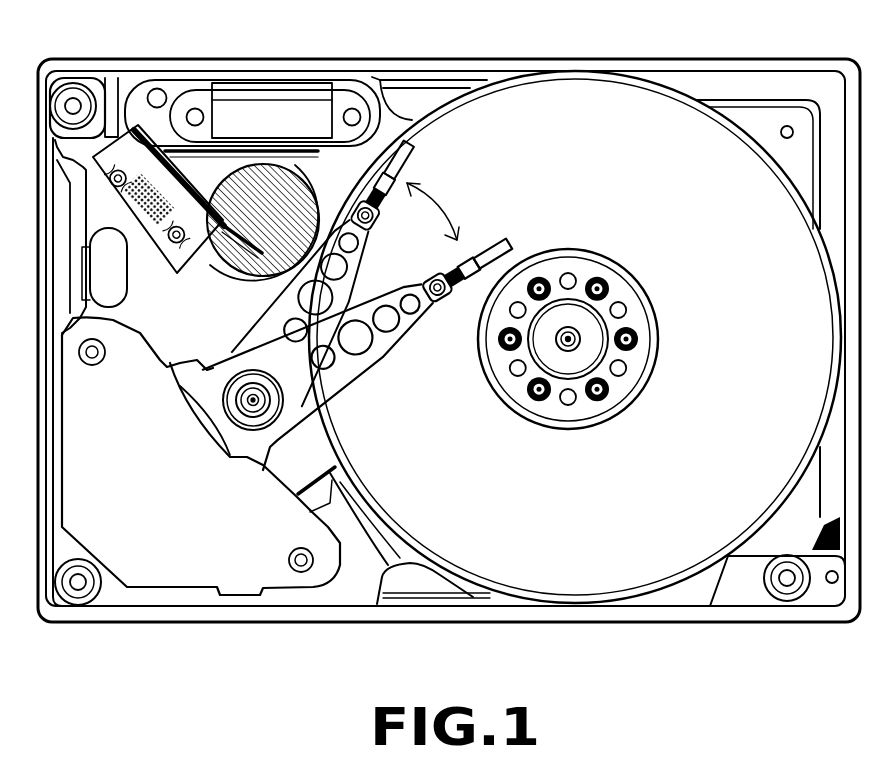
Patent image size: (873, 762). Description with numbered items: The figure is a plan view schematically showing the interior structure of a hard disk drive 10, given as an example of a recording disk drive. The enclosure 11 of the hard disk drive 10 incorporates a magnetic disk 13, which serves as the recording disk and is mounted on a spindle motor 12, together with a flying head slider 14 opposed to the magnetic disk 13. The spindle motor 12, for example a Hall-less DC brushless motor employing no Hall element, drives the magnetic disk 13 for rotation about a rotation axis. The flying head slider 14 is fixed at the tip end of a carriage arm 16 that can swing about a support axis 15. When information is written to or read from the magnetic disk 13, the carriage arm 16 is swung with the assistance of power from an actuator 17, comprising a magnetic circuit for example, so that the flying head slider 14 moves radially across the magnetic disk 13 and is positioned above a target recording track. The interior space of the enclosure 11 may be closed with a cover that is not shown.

The hard disk drive 10 is at (414, 48).
The enclosure 11 is at (648, 58).
The spindle motor 12 is at (592, 356).
The magnetic disk 13 is at (701, 238).
The flying head slider 14 is at (484, 236).
The support axis 15 is at (262, 383).
The carriage arm 16 is at (384, 357).
The actuator 17 is at (163, 500).